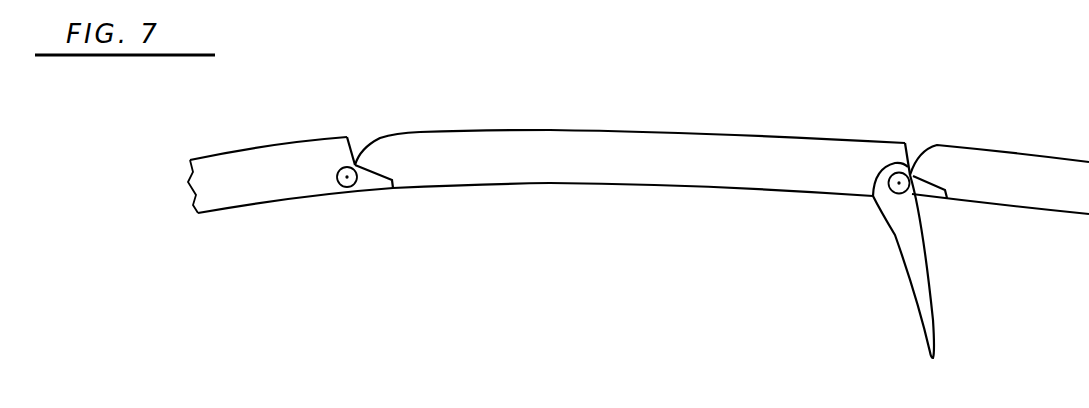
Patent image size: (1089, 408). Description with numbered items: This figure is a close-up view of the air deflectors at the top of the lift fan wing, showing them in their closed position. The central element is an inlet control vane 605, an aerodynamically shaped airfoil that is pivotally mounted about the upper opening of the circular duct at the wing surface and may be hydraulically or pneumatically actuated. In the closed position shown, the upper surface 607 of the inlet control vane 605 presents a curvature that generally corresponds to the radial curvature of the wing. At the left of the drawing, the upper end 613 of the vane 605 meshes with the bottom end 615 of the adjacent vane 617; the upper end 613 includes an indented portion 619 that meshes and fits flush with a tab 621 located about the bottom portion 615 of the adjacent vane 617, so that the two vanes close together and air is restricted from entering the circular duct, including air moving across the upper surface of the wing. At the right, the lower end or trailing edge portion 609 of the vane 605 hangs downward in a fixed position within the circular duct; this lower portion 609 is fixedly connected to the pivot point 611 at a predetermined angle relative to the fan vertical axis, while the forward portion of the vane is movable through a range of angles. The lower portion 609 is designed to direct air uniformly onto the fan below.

The inlet control vane 605 is at (649, 137).
The upper surface 607 is at (662, 130).
The trailing edge portion 609 is at (904, 259).
The pivot point 611 is at (905, 165).
The upper end 613 is at (373, 134).
The bottom end 615 is at (360, 133).
The adjacent vane 617 is at (268, 158).
The indented portion 619 is at (391, 168).
The tab 621 is at (369, 190).